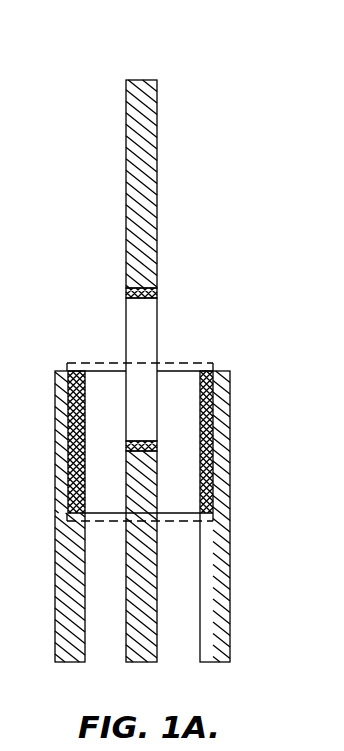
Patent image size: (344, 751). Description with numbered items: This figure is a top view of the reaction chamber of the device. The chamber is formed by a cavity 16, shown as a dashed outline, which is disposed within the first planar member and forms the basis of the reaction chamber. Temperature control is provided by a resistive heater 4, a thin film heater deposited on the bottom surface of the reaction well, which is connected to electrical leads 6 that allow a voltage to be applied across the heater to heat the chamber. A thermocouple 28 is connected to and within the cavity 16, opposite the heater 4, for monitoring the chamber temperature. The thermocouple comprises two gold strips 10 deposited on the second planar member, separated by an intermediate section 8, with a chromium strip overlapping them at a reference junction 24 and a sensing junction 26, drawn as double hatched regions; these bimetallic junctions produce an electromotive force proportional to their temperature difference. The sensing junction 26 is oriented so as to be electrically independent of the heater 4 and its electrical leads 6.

The thermocouple 28 is at (100, 48).
The gold strips 10 is at (158, 165).
The reference junction 24 is at (158, 295).
The cavity section 8 is at (158, 342).
The sensing junction 26 is at (154, 446).
The cavity 16 is at (80, 362).
The resistive heater 4 is at (182, 462).
The electrical leads 6 is at (58, 575).